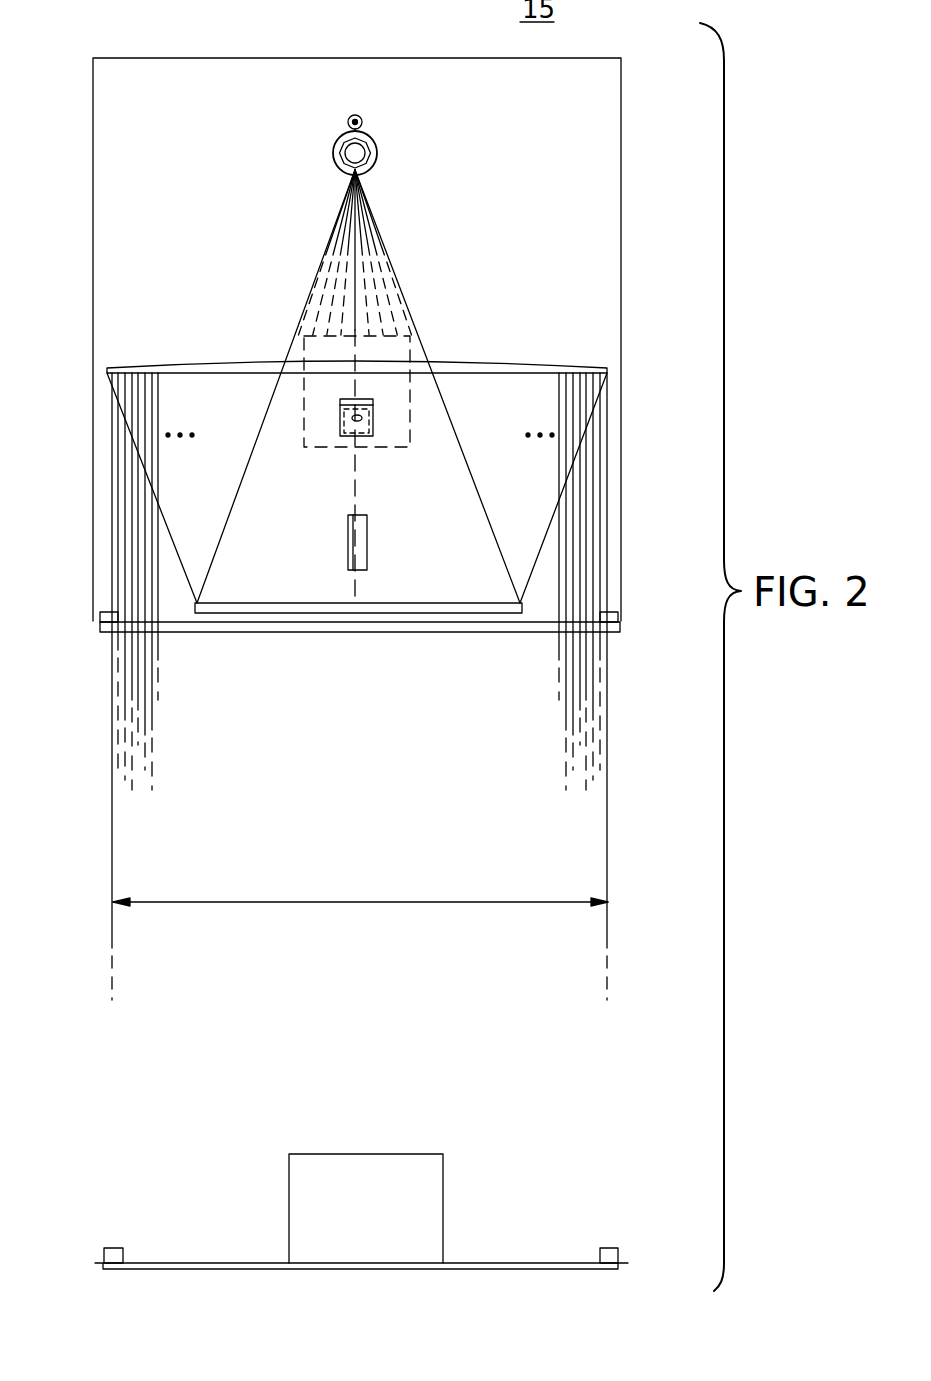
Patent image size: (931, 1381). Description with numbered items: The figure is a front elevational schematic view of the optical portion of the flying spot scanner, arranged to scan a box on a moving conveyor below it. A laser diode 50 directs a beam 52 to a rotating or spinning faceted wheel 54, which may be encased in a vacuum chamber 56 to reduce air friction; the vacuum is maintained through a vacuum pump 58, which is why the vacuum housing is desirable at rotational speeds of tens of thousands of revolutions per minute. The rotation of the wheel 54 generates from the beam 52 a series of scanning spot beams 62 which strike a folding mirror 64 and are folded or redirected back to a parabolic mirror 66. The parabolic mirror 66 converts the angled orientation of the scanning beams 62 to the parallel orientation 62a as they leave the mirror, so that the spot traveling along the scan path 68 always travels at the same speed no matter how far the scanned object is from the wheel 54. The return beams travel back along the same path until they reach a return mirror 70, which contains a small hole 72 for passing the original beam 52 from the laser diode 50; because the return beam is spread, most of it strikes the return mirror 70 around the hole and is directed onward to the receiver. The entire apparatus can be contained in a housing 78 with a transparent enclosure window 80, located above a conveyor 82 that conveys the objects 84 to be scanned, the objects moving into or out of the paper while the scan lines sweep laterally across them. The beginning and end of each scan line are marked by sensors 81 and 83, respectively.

The laser diode 50 is at (348, 548).
The beam 52 is at (358, 503).
The faceted wheel 54 is at (378, 152).
The vacuum chamber 56 is at (371, 139).
The vacuum pump 58 is at (348, 122).
The scanning spot beams 62 is at (364, 250).
The parallel orientation of the scanning spot beams 62a is at (597, 517).
The folding mirror 64 is at (423, 603).
The parabolic mirror 66 is at (466, 363).
The scan path 68 is at (372, 902).
The return mirror 70 is at (340, 433).
The small hole 72 is at (362, 418).
The housing 78 is at (622, 297).
The transparent enclosure window 80 is at (500, 633).
The sensor 81 is at (100, 614).
The conveyor 82 is at (528, 1270).
The sensor 83 is at (618, 612).
The objects 84 is at (443, 1175).